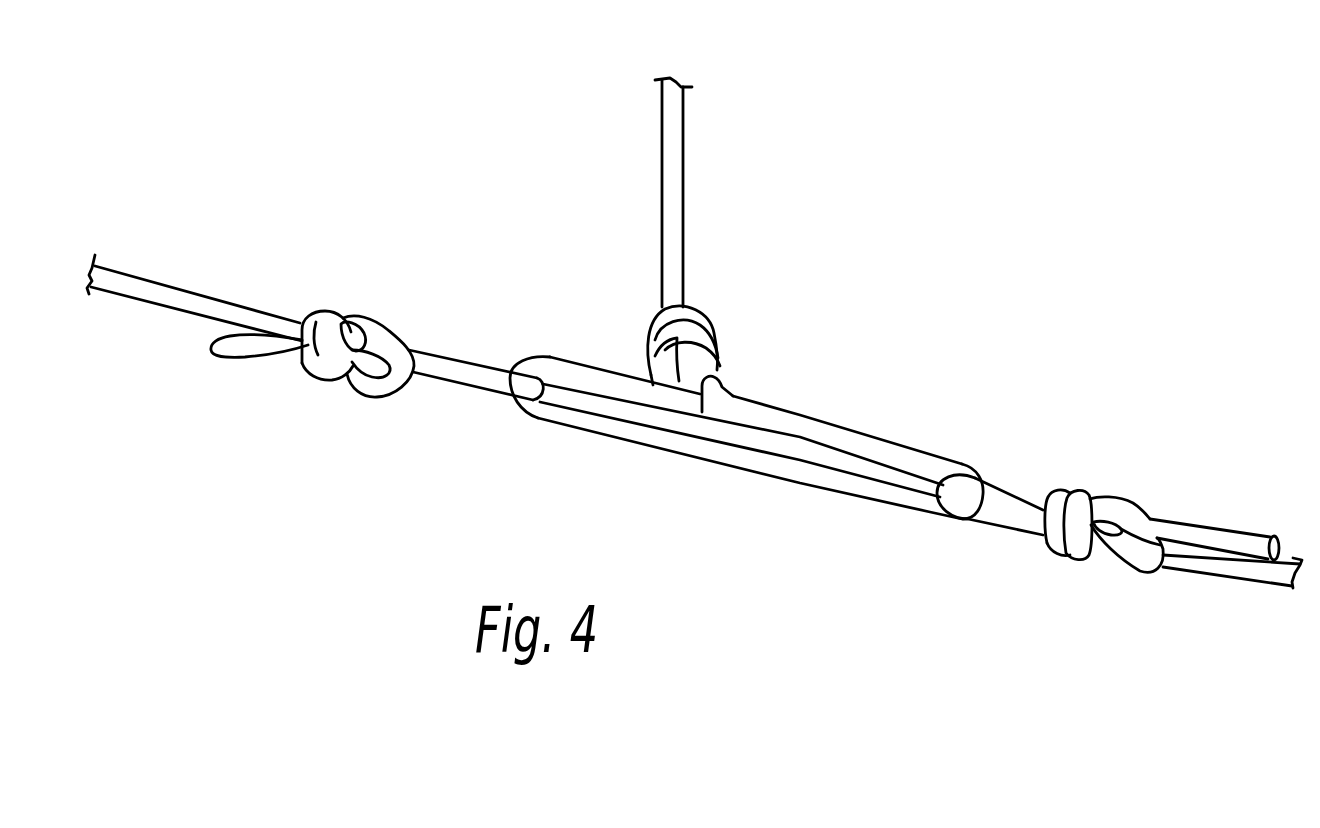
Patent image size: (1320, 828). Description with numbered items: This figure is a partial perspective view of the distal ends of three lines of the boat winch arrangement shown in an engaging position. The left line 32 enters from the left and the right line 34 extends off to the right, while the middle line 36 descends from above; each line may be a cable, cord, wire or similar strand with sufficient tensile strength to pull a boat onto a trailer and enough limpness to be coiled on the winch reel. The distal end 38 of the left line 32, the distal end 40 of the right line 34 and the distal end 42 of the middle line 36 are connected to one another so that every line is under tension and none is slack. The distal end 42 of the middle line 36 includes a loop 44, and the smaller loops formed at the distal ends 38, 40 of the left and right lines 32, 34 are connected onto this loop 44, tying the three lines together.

The left line 32 is at (147, 289).
The right line 34 is at (1228, 562).
The middle line 36 is at (675, 178).
The distal end of the left line 38 is at (294, 322).
The distal end of the right line 40 is at (1158, 546).
The distal end of the middle line 42 is at (697, 333).
The loop 44 is at (643, 438).